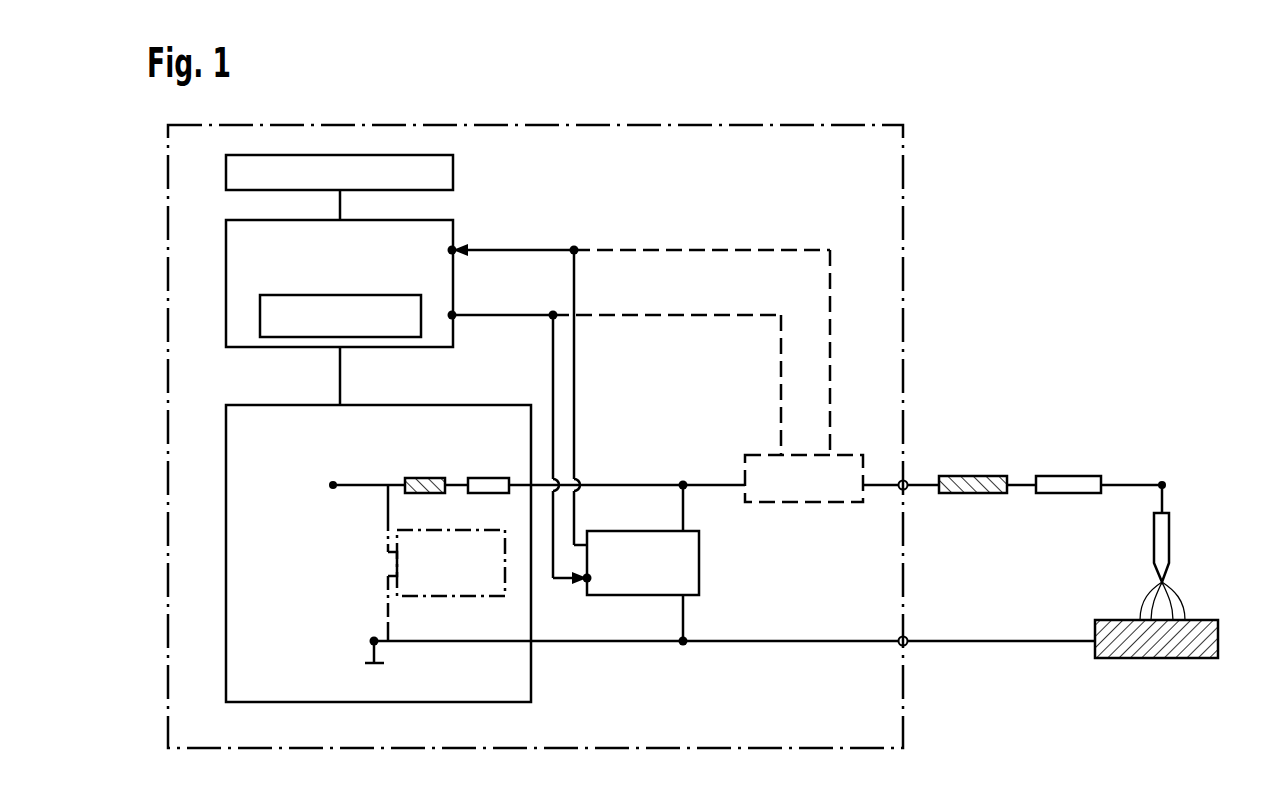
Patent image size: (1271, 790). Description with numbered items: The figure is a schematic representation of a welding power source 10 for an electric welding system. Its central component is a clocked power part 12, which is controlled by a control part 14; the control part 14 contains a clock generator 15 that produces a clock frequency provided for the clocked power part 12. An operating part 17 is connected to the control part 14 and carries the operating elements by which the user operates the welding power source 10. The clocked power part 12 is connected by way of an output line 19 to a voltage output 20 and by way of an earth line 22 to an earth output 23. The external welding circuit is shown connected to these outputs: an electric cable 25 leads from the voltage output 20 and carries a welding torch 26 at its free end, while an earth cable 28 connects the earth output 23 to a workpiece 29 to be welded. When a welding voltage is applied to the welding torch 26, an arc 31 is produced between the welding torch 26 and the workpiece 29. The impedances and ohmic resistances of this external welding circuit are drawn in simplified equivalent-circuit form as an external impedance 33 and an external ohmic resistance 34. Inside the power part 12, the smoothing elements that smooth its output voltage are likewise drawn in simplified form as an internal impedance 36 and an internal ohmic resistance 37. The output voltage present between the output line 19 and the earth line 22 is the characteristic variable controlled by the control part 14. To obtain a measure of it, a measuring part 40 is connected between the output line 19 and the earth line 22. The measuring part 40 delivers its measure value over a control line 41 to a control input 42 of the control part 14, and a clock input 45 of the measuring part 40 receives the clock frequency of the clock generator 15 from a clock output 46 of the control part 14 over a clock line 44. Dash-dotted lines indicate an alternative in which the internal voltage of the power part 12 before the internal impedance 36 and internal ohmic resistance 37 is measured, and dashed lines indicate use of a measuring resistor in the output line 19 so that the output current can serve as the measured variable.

The welding power source 10 is at (752, 106).
The clocked power part 12 is at (212, 566).
The control part 14 is at (212, 276).
The clock generator 15 is at (326, 329).
The operating part 17 is at (212, 172).
The output line 19 is at (881, 480).
The voltage output 20 is at (907, 488).
The earth line 22 is at (789, 644).
The earth output 23 is at (907, 637).
The electric cable 25 is at (1133, 483).
The welding torch 26 is at (1166, 535).
The earth cable 28 is at (1005, 644).
The workpiece 29 is at (1148, 647).
The arc 31 is at (1200, 592).
The external impedance 33 is at (972, 476).
The external ohmic resistance 34 is at (1069, 484).
The internal impedance 36 is at (424, 477).
The internal ohmic resistance 37 is at (488, 484).
The measuring part 40 is at (629, 575).
The control line 41 is at (549, 248).
The control input 42 is at (456, 246).
The clock line 44 is at (520, 318).
The clock input 45 is at (585, 584).
The clock output 46 is at (456, 312).